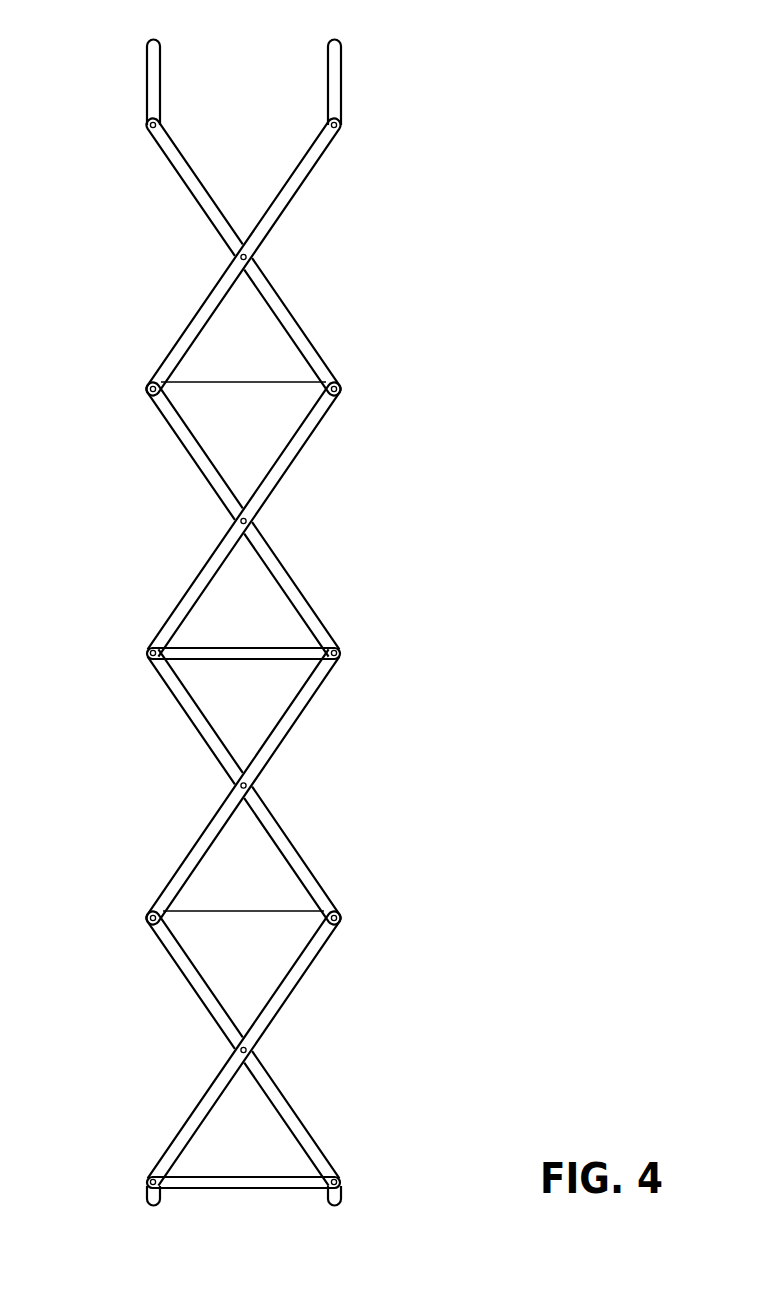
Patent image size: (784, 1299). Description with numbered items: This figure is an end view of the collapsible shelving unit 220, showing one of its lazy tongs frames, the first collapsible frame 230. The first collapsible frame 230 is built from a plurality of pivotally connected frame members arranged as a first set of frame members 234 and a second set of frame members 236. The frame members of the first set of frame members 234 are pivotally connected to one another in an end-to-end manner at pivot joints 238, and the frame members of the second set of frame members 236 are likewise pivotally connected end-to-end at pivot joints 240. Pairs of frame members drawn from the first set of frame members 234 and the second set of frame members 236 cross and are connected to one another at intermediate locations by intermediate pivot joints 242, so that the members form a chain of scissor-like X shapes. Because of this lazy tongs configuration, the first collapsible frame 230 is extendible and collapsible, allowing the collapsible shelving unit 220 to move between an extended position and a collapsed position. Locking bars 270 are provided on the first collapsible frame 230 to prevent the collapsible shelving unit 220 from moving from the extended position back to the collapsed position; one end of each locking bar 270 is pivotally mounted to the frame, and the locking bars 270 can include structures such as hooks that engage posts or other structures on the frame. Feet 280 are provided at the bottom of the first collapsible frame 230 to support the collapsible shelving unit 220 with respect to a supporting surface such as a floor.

The collapsible shelving unit 220 is at (131, 77).
The first collapsible frame 230 is at (245, 647).
The first set of frame members 234 is at (302, 173).
The second set of frame members 236 is at (182, 173).
The pivot joints 238 is at (144, 387).
The pivot joints 240 is at (344, 386).
The intermediate pivot joints 242 is at (260, 258).
The locking bar 270 is at (272, 649).
The feet 280 is at (152, 1197).